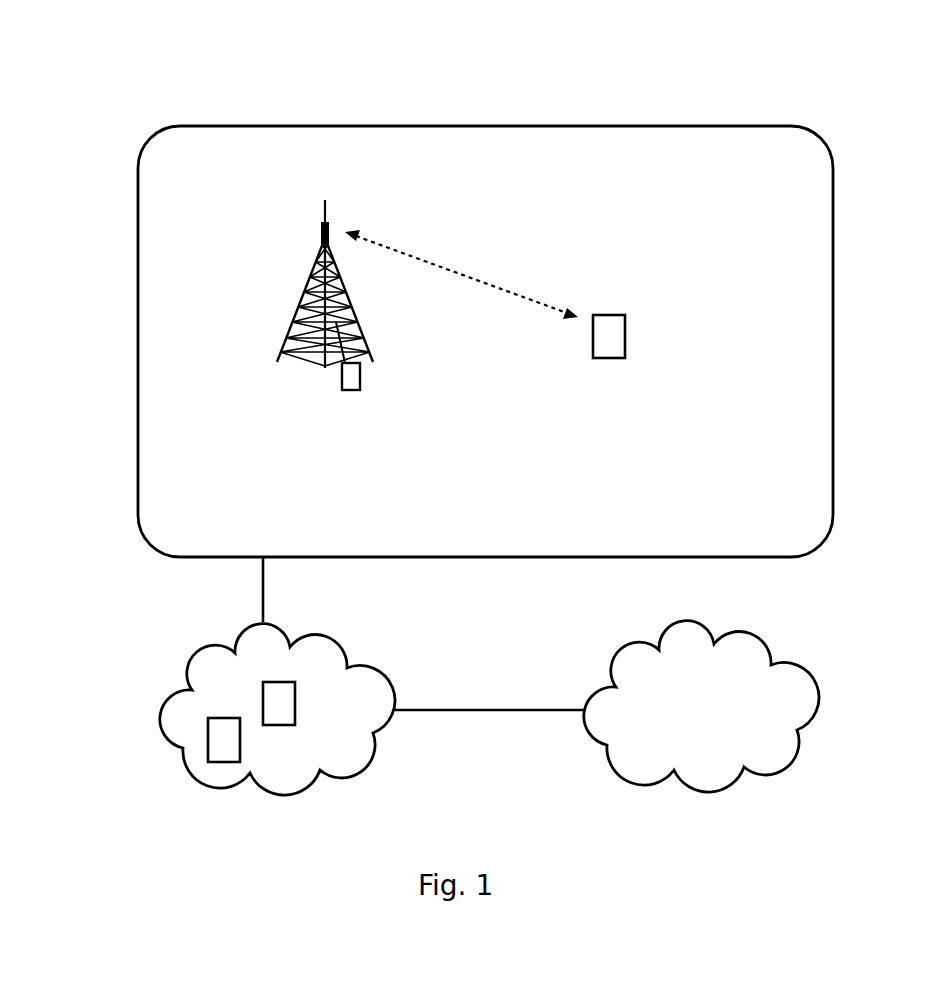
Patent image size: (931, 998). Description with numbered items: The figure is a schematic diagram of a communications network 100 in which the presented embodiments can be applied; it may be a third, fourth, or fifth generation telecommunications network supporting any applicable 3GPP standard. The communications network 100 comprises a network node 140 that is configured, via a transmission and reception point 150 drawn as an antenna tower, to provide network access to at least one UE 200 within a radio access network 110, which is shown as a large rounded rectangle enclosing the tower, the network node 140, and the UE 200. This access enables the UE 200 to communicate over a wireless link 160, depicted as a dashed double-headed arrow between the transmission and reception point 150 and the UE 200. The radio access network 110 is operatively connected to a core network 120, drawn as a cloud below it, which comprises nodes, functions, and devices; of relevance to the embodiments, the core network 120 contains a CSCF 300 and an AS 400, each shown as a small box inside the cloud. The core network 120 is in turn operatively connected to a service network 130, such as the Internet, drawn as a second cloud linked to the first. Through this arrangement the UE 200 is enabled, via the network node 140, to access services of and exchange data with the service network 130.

The communications network 100 is at (225, 75).
The radio access network 110 is at (138, 390).
The core network 120 is at (248, 692).
The service network 130 is at (728, 727).
The network node 140 is at (342, 378).
The transmission and reception point 150 is at (322, 212).
The wireless link 160 is at (450, 272).
The UE 200 is at (606, 358).
The CSCF 300 is at (240, 738).
The AS 400 is at (295, 700).